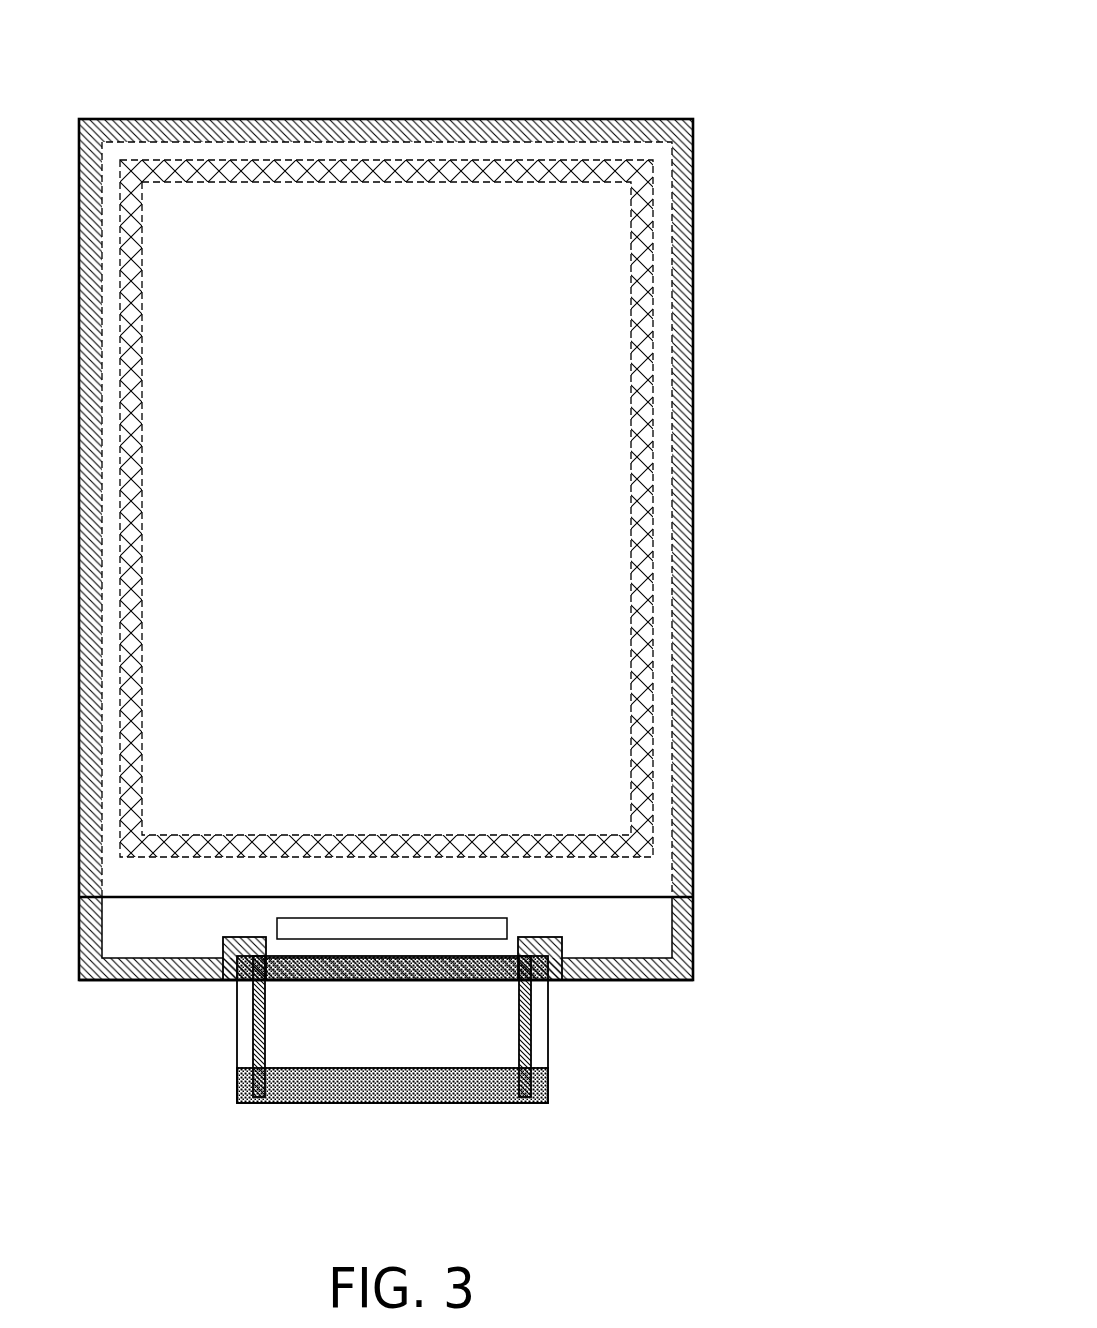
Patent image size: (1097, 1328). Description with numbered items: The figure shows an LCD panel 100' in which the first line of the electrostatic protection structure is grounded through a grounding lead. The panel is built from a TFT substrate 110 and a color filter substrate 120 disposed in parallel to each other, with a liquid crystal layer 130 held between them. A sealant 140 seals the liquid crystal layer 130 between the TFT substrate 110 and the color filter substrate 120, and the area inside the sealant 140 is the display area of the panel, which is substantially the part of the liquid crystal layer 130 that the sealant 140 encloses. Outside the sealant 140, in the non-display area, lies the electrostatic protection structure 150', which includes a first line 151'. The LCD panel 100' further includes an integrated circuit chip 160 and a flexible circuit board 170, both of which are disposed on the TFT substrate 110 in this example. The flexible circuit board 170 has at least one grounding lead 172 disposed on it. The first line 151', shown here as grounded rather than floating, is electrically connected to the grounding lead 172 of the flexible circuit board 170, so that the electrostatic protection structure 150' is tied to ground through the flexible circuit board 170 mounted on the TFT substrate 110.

The LCD panel 100' is at (504, 579).
The TFT substrate 110 is at (694, 960).
The color filter substrate 120 is at (693, 786).
The liquid crystal layer 130 is at (565, 383).
The sealant 140 is at (640, 283).
The electrostatic protection structure 150' is at (504, 549).
The first line 151' is at (504, 549).
The integrated circuit chip 160 is at (473, 924).
The flexible circuit board 170 is at (463, 1057).
The grounding lead 172 is at (548, 1097).